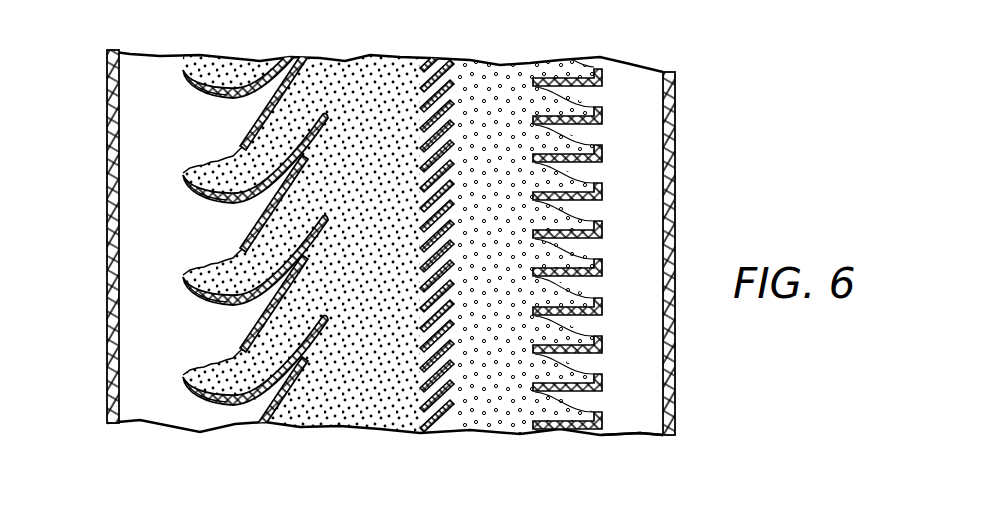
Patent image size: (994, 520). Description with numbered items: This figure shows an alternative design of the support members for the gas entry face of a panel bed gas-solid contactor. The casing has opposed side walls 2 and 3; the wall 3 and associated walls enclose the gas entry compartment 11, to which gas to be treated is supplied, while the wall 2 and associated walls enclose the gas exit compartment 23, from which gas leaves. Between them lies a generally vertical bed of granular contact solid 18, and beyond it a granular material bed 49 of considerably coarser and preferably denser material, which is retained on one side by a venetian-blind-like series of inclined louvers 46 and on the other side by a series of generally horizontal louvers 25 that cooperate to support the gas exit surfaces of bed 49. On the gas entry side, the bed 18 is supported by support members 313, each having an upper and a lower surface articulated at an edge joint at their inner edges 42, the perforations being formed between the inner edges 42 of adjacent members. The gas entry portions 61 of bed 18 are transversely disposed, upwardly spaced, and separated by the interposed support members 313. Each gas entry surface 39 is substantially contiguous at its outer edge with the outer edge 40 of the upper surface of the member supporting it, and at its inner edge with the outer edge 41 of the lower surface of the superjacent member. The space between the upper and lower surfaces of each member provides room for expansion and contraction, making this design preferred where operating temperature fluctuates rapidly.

The side wall 2 is at (668, 302).
The side wall 3 is at (107, 206).
The gas entry compartment 11 is at (137, 325).
The bed of granular contact solid 18 is at (365, 410).
The gas exit compartment 23 is at (635, 408).
The louvers 25 is at (602, 228).
The gas entry surface 39 is at (210, 164).
The outer edge 40 is at (187, 173).
The outer edge of lower surface 41 is at (240, 251).
The inner edge 42 is at (337, 214).
The louvers 46 is at (447, 213).
The granular material bed 49 is at (498, 413).
The gas entry portions 61 is at (257, 258).
The support member 313 is at (208, 197).